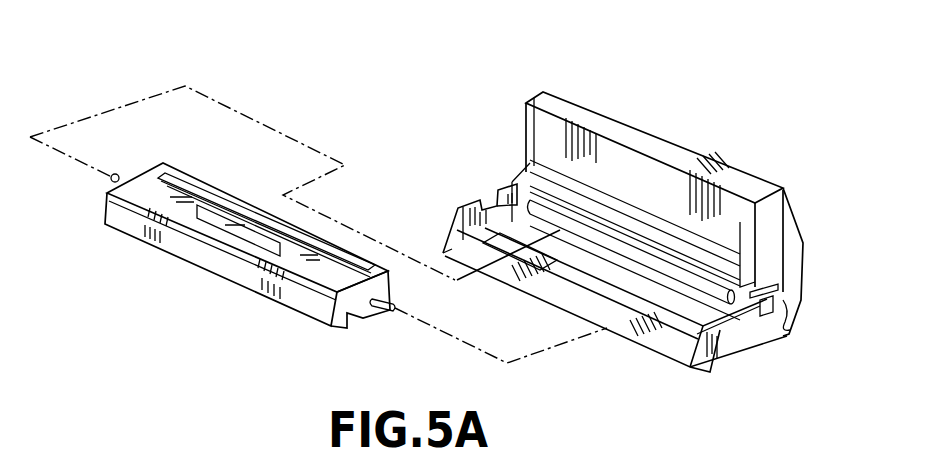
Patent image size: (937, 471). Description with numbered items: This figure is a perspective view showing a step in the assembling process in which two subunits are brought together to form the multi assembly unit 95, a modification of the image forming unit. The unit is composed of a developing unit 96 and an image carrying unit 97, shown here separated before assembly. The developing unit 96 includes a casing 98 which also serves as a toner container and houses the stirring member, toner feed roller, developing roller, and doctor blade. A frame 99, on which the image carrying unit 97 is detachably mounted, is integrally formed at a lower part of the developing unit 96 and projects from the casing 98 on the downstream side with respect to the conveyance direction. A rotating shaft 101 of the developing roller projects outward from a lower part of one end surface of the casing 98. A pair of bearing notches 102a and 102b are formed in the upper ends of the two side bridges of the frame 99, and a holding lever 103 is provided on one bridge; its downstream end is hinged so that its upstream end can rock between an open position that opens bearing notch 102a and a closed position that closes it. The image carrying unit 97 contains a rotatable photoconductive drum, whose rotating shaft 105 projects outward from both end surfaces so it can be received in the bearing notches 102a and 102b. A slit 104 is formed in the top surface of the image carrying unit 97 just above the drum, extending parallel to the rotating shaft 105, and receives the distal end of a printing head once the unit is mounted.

The multi assembly unit 95 is at (410, 108).
The developing unit 96 is at (650, 128).
The image carrying unit 97 is at (229, 190).
The casing 98 is at (730, 170).
The frame 99 is at (595, 308).
The rotating shaft 101 is at (784, 322).
The bearing notch 102a is at (752, 316).
The bearing notch 102b is at (493, 210).
The holding lever 103 is at (770, 295).
The slit 104 is at (170, 183).
The rotating shaft 105 is at (116, 174).